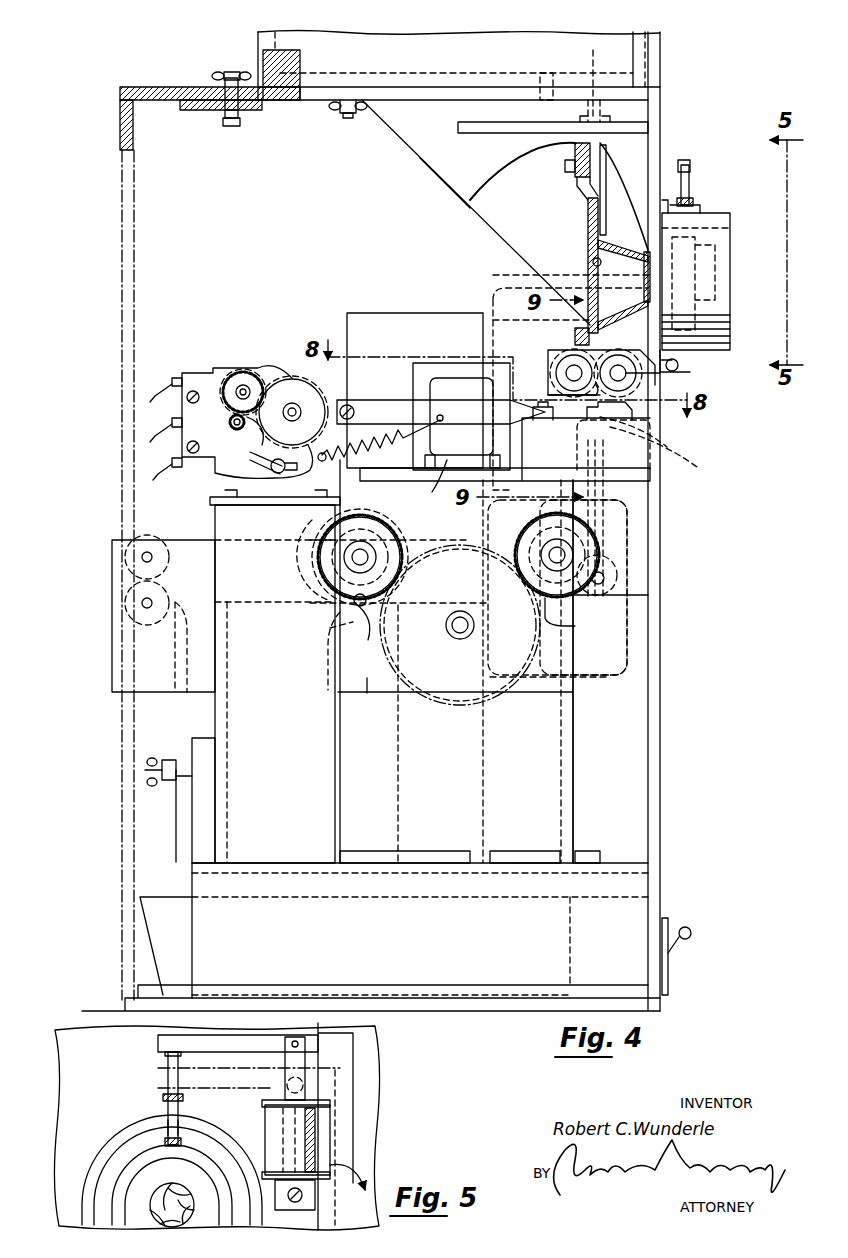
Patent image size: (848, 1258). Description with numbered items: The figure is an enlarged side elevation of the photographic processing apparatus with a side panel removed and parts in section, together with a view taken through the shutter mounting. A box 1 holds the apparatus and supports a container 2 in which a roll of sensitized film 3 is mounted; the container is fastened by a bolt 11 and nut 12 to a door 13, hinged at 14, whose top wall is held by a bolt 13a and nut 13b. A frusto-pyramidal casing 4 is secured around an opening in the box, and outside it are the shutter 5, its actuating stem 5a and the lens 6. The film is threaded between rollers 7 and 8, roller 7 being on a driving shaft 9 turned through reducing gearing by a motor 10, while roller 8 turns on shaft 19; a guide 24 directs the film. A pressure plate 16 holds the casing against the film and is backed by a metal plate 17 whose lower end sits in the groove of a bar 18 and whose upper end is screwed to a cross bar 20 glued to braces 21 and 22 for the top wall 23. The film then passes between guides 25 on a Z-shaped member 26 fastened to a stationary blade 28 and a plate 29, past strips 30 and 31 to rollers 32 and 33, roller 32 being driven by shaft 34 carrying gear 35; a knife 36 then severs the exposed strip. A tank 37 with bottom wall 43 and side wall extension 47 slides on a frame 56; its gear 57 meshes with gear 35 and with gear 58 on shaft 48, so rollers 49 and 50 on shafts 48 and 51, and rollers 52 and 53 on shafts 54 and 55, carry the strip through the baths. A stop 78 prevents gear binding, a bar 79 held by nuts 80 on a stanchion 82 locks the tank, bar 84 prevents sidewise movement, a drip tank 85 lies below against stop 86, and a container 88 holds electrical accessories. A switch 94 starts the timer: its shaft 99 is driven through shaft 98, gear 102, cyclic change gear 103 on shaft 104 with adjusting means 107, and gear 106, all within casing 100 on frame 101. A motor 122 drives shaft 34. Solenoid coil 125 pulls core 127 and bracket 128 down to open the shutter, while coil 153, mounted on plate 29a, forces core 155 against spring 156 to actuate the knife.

In FIG. 4, the box 1 is at (664, 735).
In FIG. 4, the container 2 is at (662, 48).
In FIG. 4, the roll of sensitized film 3 is at (596, 48).
In FIG. 4, the frusto-pyramidal casing 4 is at (622, 256).
In FIG. 5, the shutter 5 is at (162, 1202).
In FIG. 4, the actuating stem 5a is at (690, 188).
In FIG. 5, the actuating stem 5a is at (162, 1062).
In FIG. 4, the lens 6 is at (722, 252).
In FIG. 4, the roller 7 is at (556, 355).
In FIG. 4, the roller 8 is at (614, 350).
In FIG. 4, the driving shaft 9 is at (566, 374).
In FIG. 4, the motor 10 is at (494, 298).
In FIG. 4, the bolt 11 is at (345, 115).
In FIG. 4, the nut 12 is at (359, 112).
In FIG. 5, the door 13 is at (68, 1040).
In FIG. 4, the bolt 13a is at (234, 126).
In FIG. 4, the nut 13b is at (222, 72).
In FIG. 4, the hinge 14 is at (694, 361).
In FIG. 4, the pressure plate 16 is at (593, 263).
In FIG. 4, the metal plate 17 is at (588, 232).
In FIG. 4, the bar 18 is at (572, 336).
In FIG. 4, the shaft 19 is at (678, 365).
In FIG. 4, the cross bar 20 is at (562, 160).
In FIG. 4, the brace 21 is at (436, 165).
In FIG. 4, the brace 22 is at (478, 212).
In FIG. 4, the top wall 23 is at (178, 88).
In FIG. 4, the guide 24 is at (606, 185).
In FIG. 4, the guides 25 is at (560, 392).
In FIG. 4, the Z-shaped member 26 is at (632, 412).
In FIG. 4, the stationary blade 28 is at (647, 440).
In FIG. 4, the plate 29 is at (666, 450).
In FIG. 4, the plate 29a is at (630, 480).
In FIG. 4, the strip 30 is at (588, 458).
In FIG. 4, the strip 31 is at (603, 448).
In FIG. 4, the roller 32 is at (537, 532).
In FIG. 4, the roller 33 is at (620, 563).
In FIG. 4, the shaft 34 is at (550, 553).
In FIG. 4, the gear 35 is at (565, 625).
In FIG. 4, the knife 36 is at (563, 422).
In FIG. 4, the tank 37 is at (578, 770).
In FIG. 4, the bottom wall 43 is at (415, 852).
In FIG. 4, the side wall extension 47 is at (112, 662).
In FIG. 4, the shaft 48 is at (368, 552).
In FIG. 4, the roller 49 is at (368, 515).
In FIG. 4, the roller 50 is at (348, 638).
In FIG. 4, the shaft 51 is at (368, 630).
In FIG. 4, the roller 52 is at (112, 556).
In FIG. 4, the roller 53 is at (112, 603).
In FIG. 4, the shaft 54 is at (152, 559).
In FIG. 4, the shaft 55 is at (148, 608).
In FIG. 4, the frame 56 is at (618, 862).
In FIG. 4, the gear 57 is at (440, 705).
In FIG. 4, the gear 58 is at (460, 125).
In FIG. 4, the stop 78 is at (592, 852).
In FIG. 4, the bar 79 is at (168, 788).
In FIG. 4, the nuts 80 is at (150, 778).
In FIG. 4, the stanchion 82 is at (200, 838).
In FIG. 4, the bar 84 is at (500, 852).
In FIG. 4, the tank 85 is at (152, 945).
In FIG. 4, the stop 86 is at (590, 990).
In FIG. 4, the container 88 is at (380, 313).
In FIG. 4, the switch 94 is at (692, 930).
In FIG. 4, the shaft 98 is at (247, 440).
In FIG. 4, the timer shaft 99 is at (290, 416).
In FIG. 4, the casing 100 is at (212, 372).
In FIG. 4, the frame 101 is at (215, 528).
In FIG. 4, the gear 102 is at (230, 424).
In FIG. 4, the cyclic change gear 103 is at (243, 372).
In FIG. 4, the shaft 104 is at (245, 385).
In FIG. 4, the gear 106 is at (293, 376).
In FIG. 4, the adjusting means 107 is at (250, 470).
In FIG. 4, the motor 122 is at (628, 642).
In FIG. 5, the solenoid coil 125 is at (330, 1143).
In FIG. 5, the solenoid core 127 is at (288, 1066).
In FIG. 4, the bracket 128 is at (686, 160).
In FIG. 5, the bracket 128 is at (236, 1036).
In FIG. 4, the solenoid coil 153 is at (452, 380).
In FIG. 4, the solenoid core 155 is at (418, 388).
In FIG. 4, the spring 156 is at (365, 448).